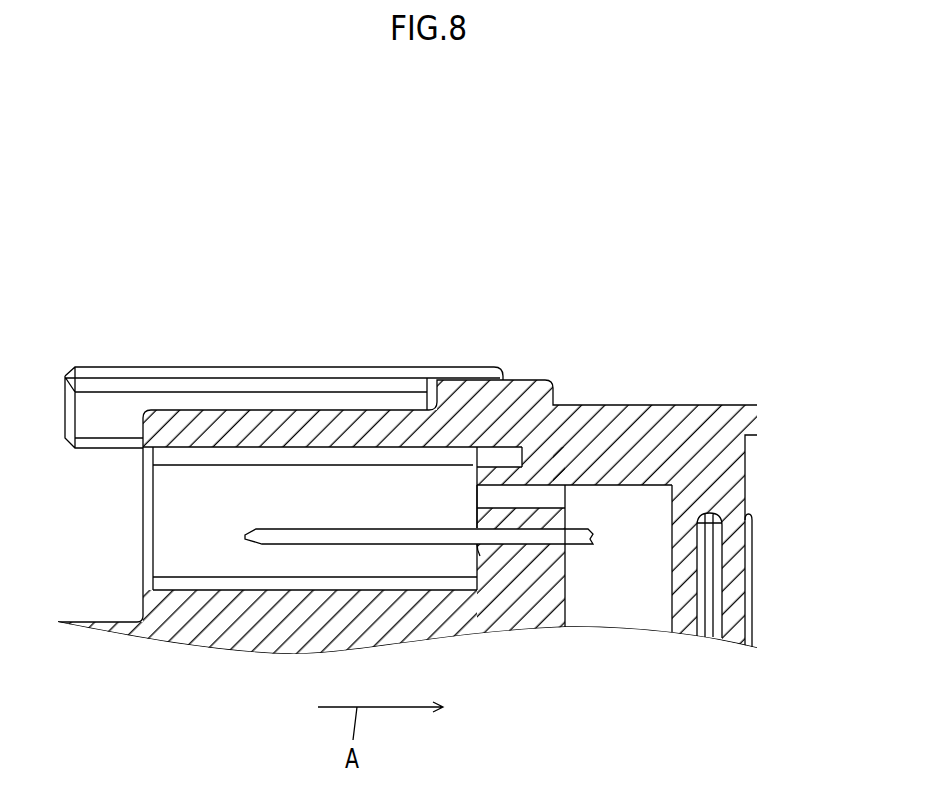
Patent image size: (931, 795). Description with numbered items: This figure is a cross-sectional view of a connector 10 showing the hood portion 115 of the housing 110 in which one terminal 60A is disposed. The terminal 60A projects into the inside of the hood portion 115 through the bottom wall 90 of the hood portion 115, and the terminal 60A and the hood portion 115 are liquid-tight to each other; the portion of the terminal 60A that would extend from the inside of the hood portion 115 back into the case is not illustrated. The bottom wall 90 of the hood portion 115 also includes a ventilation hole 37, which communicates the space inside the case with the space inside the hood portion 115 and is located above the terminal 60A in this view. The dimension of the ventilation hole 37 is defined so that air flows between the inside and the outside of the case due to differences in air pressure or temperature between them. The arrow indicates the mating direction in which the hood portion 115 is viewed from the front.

The connector 10 is at (714, 319).
The housing 110 is at (329, 383).
The hood portion 115 is at (215, 450).
The ventilation hole 37 is at (518, 487).
The bottom wall 90 is at (557, 578).
The terminal 60A is at (372, 529).